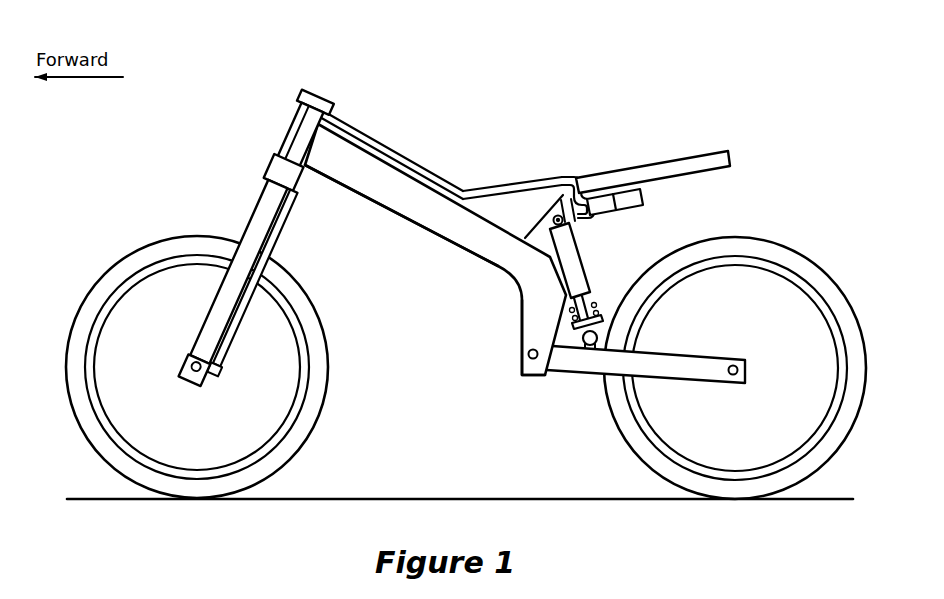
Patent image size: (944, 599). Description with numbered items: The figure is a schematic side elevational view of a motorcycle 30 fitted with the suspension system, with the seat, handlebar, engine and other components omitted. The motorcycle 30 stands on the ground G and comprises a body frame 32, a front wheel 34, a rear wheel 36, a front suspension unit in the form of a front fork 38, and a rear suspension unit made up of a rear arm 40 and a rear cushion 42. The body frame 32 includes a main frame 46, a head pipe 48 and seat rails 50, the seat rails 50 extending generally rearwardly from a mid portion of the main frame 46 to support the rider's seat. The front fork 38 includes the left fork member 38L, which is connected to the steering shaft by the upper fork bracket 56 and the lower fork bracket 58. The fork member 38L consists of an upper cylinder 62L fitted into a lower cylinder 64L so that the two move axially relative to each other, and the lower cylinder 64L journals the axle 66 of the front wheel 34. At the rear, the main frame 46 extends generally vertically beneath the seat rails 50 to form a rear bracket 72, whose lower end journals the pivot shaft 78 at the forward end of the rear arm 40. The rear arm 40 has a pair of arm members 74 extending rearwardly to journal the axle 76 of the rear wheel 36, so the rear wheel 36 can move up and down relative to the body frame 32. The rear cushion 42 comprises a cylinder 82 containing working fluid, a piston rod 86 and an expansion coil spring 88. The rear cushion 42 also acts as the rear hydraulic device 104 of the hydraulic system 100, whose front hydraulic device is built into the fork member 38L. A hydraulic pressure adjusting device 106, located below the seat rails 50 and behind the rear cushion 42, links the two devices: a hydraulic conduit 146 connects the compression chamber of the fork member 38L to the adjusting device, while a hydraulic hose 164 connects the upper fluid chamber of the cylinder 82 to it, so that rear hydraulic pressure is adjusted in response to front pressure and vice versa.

The motorcycle 30 is at (435, 236).
The body frame 32 is at (440, 243).
The front wheel 34 is at (97, 282).
The rear wheel 36 is at (823, 270).
The front fork 38 is at (243, 227).
The fork member 38L is at (222, 255).
The rear arm 40 is at (647, 399).
The rear cushion 42 is at (617, 243).
The rear hydraulic device 104 is at (617, 243).
The main frame 46 is at (393, 203).
The head pipe 48 is at (308, 147).
The seat rails 50 is at (673, 158).
The upper fork bracket 56 is at (305, 90).
The lower fork bracket 58 is at (277, 157).
The upper cylinder 62L is at (263, 197).
The lower cylinder 64L is at (198, 338).
The axle 66 is at (193, 374).
The rear bracket 72 is at (532, 305).
The arm members 74 is at (695, 368).
The axle 76 is at (733, 377).
The pivot shaft 78 is at (530, 356).
The cylinder 82 is at (577, 243).
The piston rod 86 is at (587, 298).
The expansion coil spring 88 is at (597, 311).
The hydraulic system 100 is at (673, 193).
The hydraulic pressure adjusting device 106 is at (643, 206).
The hydraulic conduit 146 is at (281, 224).
The hydraulic conduit or hose 164 is at (568, 198).
The ground G is at (410, 496).